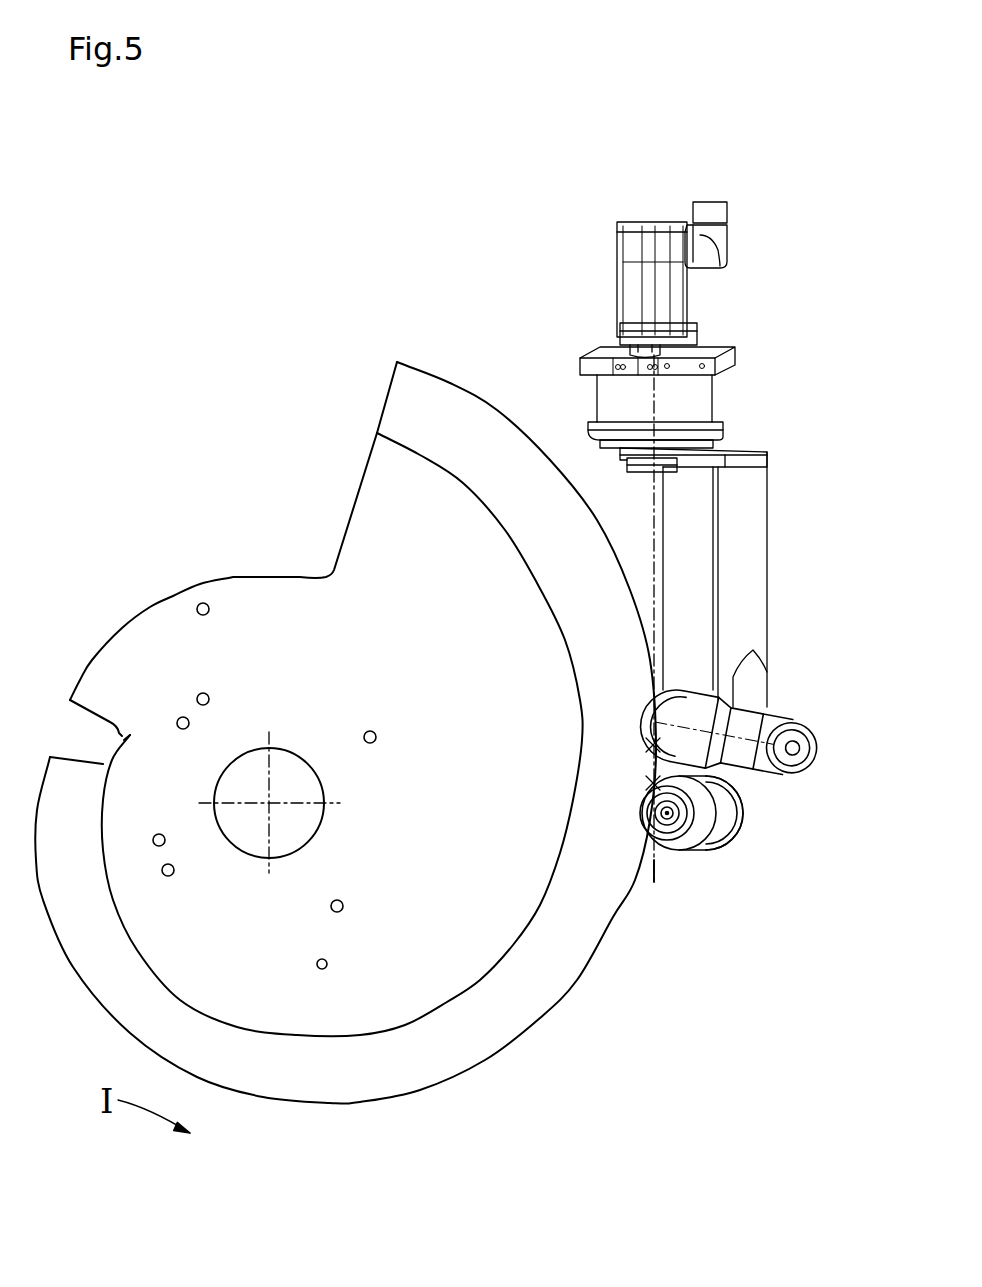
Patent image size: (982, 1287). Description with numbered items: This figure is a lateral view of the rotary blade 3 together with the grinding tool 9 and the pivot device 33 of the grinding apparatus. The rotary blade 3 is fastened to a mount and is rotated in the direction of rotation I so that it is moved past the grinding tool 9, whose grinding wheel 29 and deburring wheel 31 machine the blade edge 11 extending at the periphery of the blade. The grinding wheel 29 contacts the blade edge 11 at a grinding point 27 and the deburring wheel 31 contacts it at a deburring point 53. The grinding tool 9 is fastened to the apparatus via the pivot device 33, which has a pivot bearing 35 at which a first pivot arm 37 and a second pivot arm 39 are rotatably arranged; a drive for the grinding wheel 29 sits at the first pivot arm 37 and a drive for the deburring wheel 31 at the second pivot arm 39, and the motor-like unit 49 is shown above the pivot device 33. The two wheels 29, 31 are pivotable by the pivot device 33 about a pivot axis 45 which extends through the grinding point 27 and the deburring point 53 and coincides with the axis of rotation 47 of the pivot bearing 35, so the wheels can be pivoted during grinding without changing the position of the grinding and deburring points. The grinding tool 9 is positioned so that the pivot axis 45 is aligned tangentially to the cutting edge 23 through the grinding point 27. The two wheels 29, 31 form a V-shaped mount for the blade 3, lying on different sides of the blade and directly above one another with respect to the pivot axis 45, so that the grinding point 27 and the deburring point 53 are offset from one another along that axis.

The rotary blade 3 is at (284, 513).
The grinding tool 9 is at (683, 579).
The blade edge 11 is at (345, 733).
The cutting edge 23 is at (540, 1018).
The grinding point 27 is at (648, 742).
The grinding wheel 29 is at (680, 688).
The deburring wheel 31 is at (677, 853).
The pivot device 33 is at (640, 337).
The pivot bearing 35 is at (690, 445).
The first pivot arm 37 is at (748, 538).
The second pivot arm 39 is at (672, 555).
The pivot axis 45 is at (655, 870).
The axis of rotation 47 is at (655, 870).
The motor 49 is at (710, 315).
The deburring point 53 is at (657, 792).